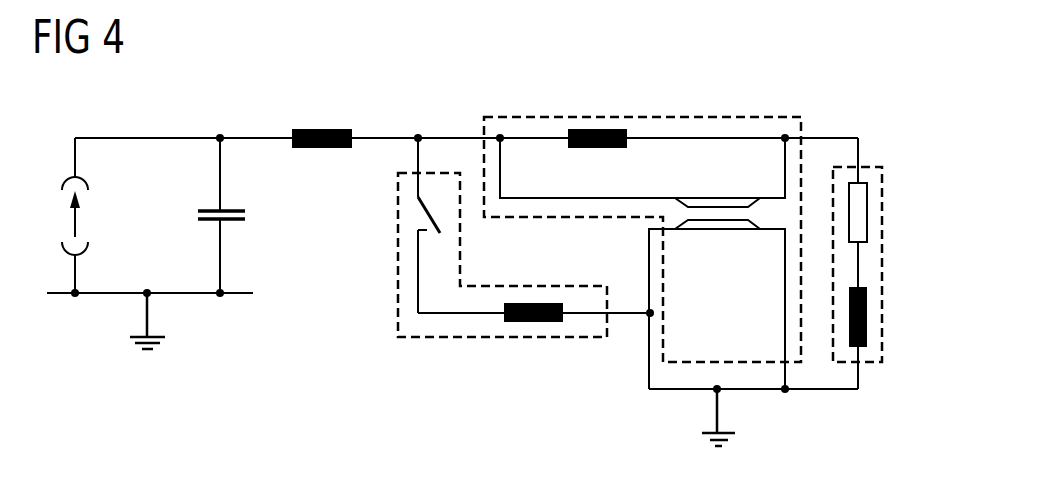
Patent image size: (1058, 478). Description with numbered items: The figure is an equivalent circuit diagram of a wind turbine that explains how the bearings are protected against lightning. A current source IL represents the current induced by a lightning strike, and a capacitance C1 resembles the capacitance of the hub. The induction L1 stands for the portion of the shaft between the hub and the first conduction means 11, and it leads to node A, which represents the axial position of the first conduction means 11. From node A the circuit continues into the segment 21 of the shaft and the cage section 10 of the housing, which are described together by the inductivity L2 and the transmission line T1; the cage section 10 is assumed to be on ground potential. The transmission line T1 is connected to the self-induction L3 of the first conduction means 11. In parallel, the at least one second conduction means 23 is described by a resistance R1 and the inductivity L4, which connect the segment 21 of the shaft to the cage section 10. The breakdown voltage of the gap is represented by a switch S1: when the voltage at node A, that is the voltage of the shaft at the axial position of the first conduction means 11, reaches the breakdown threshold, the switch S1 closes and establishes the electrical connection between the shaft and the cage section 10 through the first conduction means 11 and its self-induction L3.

The cage section 10 is at (642, 192).
The segment 21 is at (662, 117).
The first conduction means 11 is at (498, 282).
The second conduction means 23 is at (894, 224).
The induction L1 is at (320, 129).
The inductivity L2 is at (596, 129).
The self-induction L3 is at (535, 322).
The inductivity L4 is at (867, 315).
The capacitance C1 is at (228, 222).
The resistance R1 is at (867, 213).
The switch S1 is at (418, 215).
The transmission line T1 is at (722, 178).
The current induced by a lightning strike IL is at (60, 216).
The node A is at (418, 138).